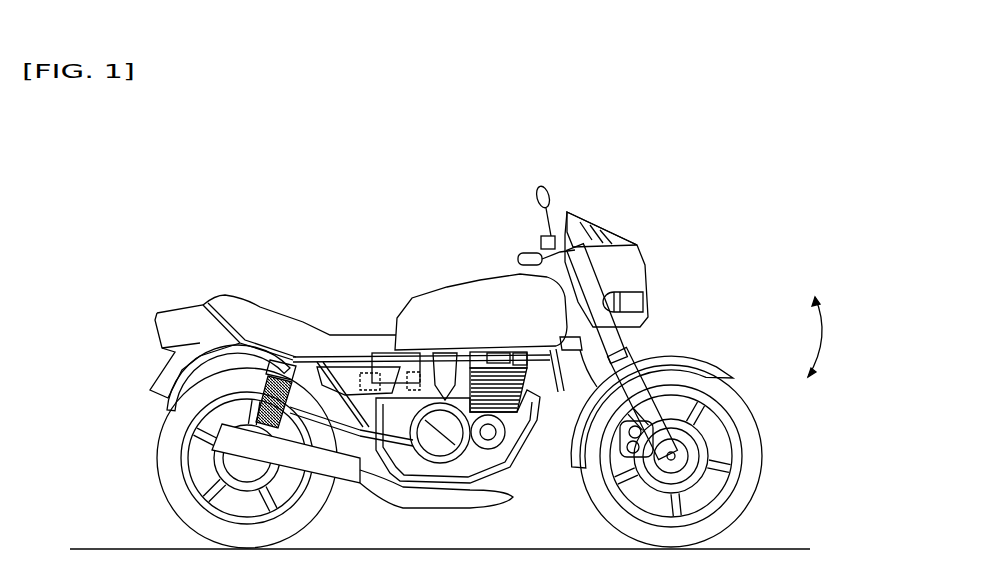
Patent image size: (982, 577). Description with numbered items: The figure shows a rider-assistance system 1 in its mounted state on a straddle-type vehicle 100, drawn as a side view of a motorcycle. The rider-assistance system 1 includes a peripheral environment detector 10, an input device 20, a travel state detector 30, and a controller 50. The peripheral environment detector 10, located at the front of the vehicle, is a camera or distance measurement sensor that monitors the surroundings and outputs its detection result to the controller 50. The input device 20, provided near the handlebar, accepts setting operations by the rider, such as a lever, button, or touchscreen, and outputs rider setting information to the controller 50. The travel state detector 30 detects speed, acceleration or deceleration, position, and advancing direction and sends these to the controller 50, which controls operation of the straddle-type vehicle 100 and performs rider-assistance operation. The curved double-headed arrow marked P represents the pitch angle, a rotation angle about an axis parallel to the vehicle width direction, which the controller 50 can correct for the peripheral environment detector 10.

The rider-assistance system 1 is at (265, 208).
The straddle-type vehicle 100 is at (781, 149).
The peripheral environment detector 10 is at (603, 233).
The input device 20 is at (580, 222).
The travel state detector 30 is at (417, 362).
The controller 50 is at (368, 373).
The pitch angle P is at (831, 337).